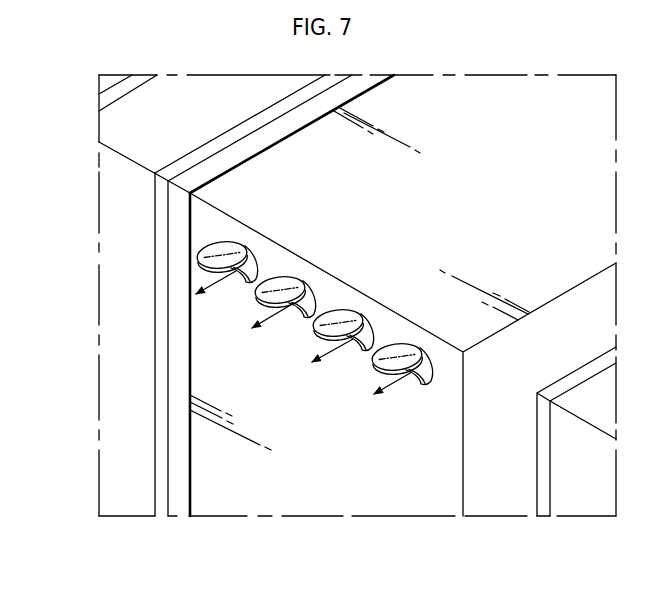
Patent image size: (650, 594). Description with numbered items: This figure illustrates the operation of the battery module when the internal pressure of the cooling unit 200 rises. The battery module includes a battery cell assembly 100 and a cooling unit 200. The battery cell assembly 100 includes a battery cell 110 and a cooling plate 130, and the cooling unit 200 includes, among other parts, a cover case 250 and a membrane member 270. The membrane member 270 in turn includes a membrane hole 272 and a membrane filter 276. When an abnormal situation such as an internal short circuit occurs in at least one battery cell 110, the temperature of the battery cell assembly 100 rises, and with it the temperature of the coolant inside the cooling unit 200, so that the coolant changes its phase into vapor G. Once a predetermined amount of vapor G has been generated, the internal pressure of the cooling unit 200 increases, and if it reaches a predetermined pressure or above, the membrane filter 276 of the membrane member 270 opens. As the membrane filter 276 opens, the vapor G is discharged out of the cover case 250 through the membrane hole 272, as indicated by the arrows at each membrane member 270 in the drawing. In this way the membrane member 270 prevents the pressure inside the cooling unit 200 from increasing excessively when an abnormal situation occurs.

The battery cell assembly 100 is at (319, 324).
The battery cell 110 is at (125, 253).
The cooling plate 130 is at (162, 305).
The cooling unit 200 is at (331, 528).
The cover case 250 is at (262, 485).
The membrane member 270 is at (314, 301).
The membrane hole 272 is at (295, 320).
The membrane filter 276 is at (279, 277).
The vapor G is at (225, 280).